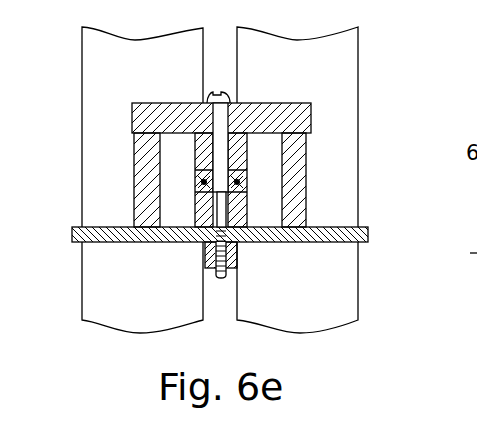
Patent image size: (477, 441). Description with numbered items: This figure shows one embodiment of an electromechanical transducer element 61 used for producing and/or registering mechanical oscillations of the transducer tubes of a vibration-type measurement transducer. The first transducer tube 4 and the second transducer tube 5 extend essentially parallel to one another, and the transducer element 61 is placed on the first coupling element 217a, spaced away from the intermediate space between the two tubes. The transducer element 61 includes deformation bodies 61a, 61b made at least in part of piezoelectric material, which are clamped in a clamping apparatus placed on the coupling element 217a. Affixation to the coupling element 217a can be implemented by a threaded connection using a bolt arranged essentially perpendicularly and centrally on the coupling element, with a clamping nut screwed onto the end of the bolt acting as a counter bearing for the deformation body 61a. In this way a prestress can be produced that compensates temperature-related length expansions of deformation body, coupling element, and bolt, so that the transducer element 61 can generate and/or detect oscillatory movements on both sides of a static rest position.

The first transducer tube 4 is at (105, 79).
The second transducer tube 5 is at (348, 72).
The transducer element 61 is at (212, 185).
The deformation body 61a is at (247, 148).
The deformation body 61b is at (247, 209).
The first coupling element 217a is at (368, 234).